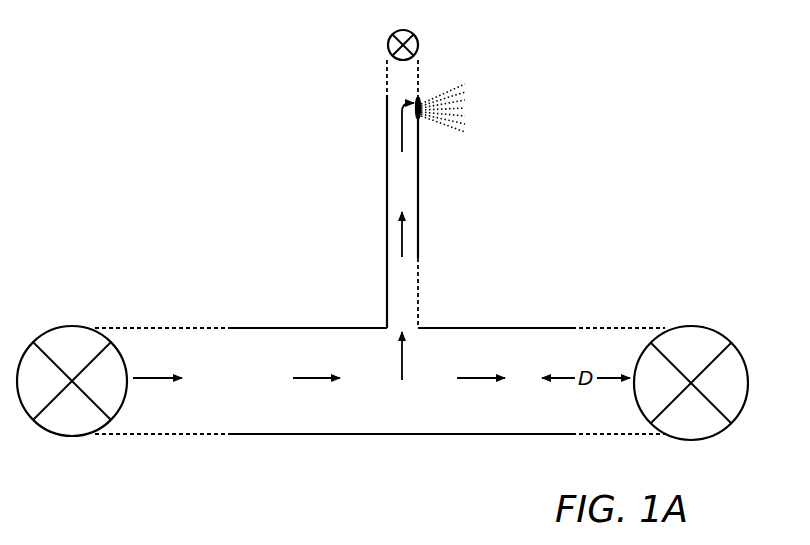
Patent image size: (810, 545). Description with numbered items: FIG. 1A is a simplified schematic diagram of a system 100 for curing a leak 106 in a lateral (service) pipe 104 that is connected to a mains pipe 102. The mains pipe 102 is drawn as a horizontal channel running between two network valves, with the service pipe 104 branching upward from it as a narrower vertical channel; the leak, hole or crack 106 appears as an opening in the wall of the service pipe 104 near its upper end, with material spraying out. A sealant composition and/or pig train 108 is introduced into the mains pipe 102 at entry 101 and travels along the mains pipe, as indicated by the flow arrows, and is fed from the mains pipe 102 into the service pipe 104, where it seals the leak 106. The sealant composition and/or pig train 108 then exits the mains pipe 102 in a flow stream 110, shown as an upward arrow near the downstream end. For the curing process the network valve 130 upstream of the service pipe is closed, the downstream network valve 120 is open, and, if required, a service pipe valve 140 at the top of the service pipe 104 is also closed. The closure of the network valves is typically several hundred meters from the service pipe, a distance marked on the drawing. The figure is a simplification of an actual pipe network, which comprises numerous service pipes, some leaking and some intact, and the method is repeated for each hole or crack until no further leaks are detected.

The system 100 is at (661, 116).
The entry 101 is at (130, 345).
The mains pipe 102 is at (305, 328).
The lateral (service) pipe 104 is at (420, 213).
The leak 106 is at (425, 95).
The sealant composition and/or pig train 108 is at (158, 382).
The flow stream 110 is at (663, 295).
The downstream valve 120 is at (722, 333).
The upstream valve 130 is at (68, 326).
The service pipe valve 140 is at (436, 35).